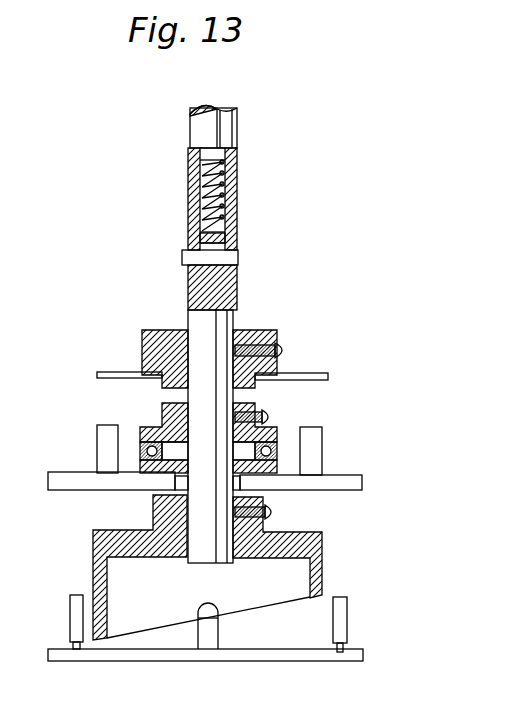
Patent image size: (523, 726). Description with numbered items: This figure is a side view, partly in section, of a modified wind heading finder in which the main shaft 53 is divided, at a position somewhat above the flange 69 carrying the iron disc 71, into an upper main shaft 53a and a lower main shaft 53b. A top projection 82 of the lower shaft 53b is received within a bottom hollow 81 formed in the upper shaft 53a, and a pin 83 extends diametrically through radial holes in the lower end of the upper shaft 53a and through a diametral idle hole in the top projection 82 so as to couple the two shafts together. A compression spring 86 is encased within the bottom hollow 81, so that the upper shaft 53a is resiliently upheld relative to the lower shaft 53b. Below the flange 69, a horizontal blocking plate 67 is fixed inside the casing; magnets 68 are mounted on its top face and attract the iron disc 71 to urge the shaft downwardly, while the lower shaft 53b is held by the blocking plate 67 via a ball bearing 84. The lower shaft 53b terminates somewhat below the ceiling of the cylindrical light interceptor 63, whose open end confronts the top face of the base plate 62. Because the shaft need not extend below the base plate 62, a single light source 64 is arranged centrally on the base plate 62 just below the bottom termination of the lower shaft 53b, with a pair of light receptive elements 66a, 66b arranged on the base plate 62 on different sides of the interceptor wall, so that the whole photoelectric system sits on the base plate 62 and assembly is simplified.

The main shaft 53 is at (182, 145).
The upper main shaft 53a is at (230, 137).
The lower main shaft 53b is at (236, 292).
The bottom hollow 81 is at (222, 188).
The top projection 82 is at (190, 228).
The pin 83 is at (213, 257).
The compression spring 86 is at (216, 208).
The flange 69 is at (145, 340).
The iron disc 71 is at (110, 372).
The ball bearing 84 is at (277, 427).
The magnets 68 is at (100, 437).
The blocking plate 67 is at (75, 475).
The light interceptor 63 is at (103, 533).
The light receptive element 66a is at (76, 595).
The light receptive element 66b is at (342, 599).
The single light source 64 is at (210, 635).
The base plate 62 is at (127, 654).